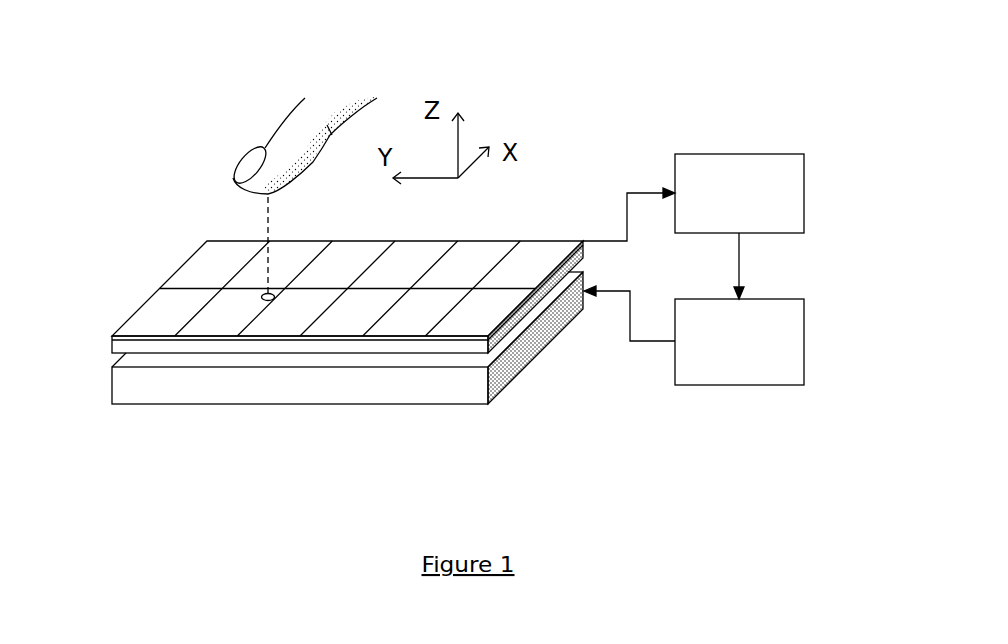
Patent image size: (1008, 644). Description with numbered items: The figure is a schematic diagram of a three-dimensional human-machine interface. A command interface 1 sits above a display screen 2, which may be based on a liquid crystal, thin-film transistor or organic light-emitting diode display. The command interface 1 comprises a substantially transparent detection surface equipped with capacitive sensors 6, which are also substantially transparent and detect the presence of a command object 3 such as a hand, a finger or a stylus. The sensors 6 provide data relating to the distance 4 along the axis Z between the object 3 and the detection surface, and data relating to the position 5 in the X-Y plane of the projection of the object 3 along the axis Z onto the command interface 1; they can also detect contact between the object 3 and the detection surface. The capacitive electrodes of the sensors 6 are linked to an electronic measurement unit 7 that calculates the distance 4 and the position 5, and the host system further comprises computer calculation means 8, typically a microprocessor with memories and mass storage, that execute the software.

The command interface 1 is at (565, 241).
The display screen 2 is at (300, 404).
The command object 3 is at (240, 162).
The distance 4 is at (270, 255).
The position 5 is at (263, 298).
The capacitive sensors 6 is at (135, 325).
The electronic measurement unit 7 is at (738, 154).
The computer calculation means 8 is at (804, 341).